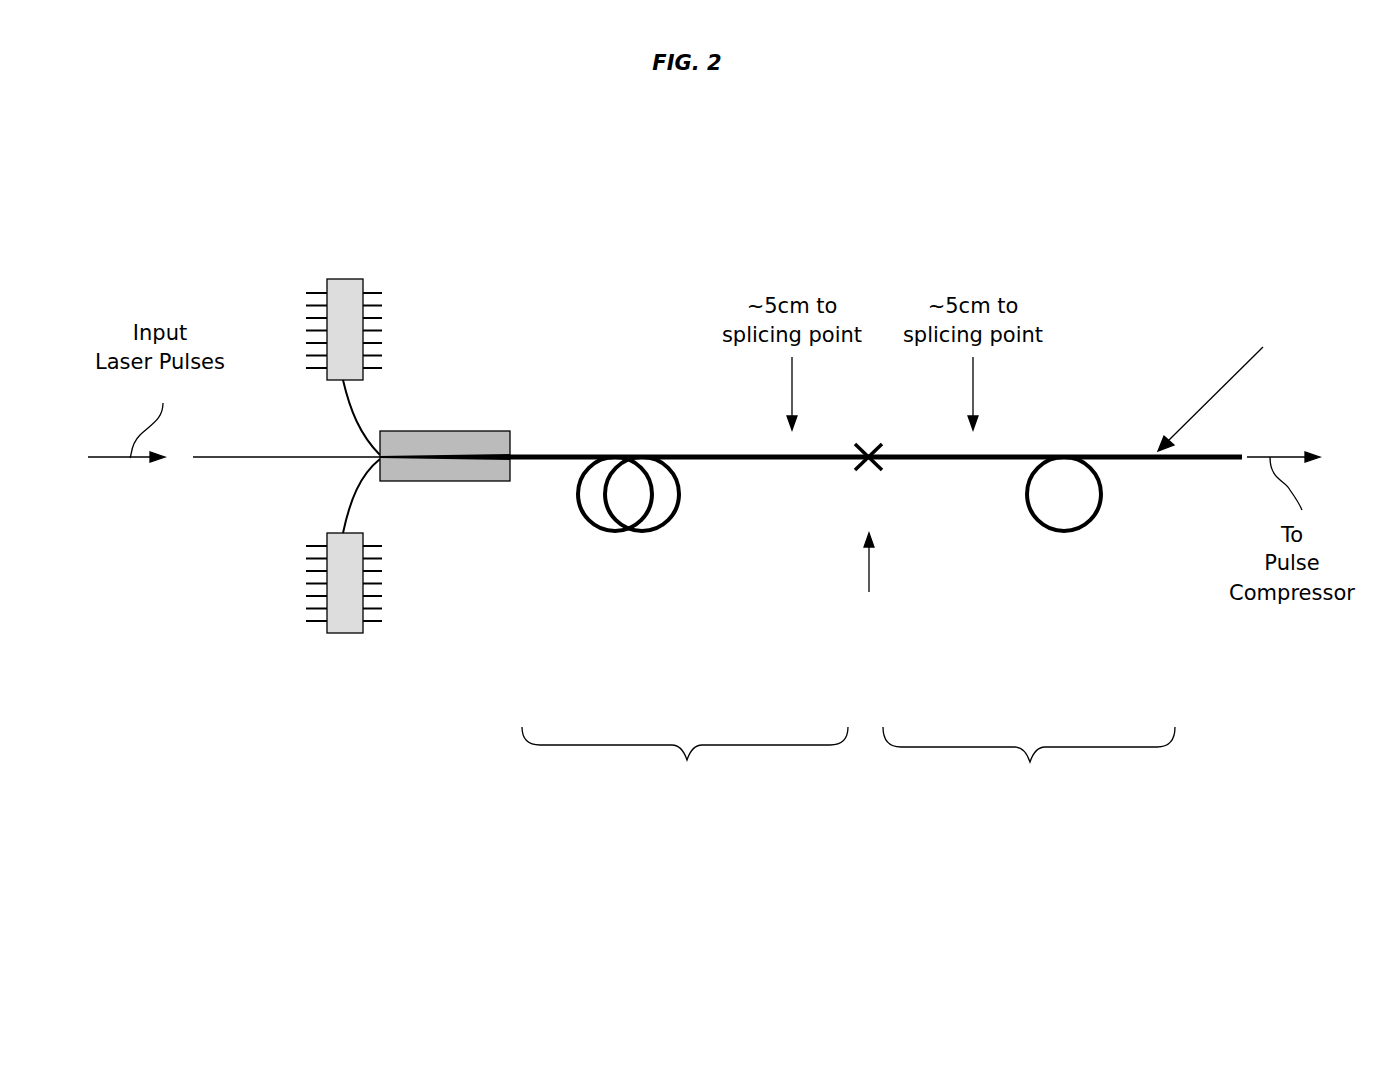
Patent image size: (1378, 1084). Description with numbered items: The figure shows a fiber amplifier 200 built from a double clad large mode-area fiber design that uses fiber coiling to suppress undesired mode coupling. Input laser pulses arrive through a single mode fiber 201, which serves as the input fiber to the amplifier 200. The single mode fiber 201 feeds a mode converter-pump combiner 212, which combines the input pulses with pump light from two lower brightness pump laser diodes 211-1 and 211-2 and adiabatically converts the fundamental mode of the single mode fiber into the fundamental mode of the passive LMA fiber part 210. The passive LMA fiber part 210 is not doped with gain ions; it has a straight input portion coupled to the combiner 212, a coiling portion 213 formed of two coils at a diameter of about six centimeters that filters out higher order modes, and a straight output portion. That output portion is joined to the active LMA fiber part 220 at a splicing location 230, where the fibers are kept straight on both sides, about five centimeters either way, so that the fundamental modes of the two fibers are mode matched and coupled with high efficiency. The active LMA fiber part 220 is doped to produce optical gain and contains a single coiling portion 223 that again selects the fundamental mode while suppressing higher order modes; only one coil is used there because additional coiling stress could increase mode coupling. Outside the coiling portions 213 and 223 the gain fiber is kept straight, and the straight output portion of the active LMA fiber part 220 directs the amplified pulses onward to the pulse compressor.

The fiber amplifier 200 is at (464, 122).
The single mode fiber 201 is at (270, 458).
The pump laser diode 211-1 is at (336, 339).
The pump laser diode 211-2 is at (342, 578).
The mode converter-pump combiner 212 is at (445, 431).
The coiling portion of passive LMA fiber 213 is at (615, 533).
The passive LMA fiber part 210 is at (689, 642).
The splicing location 230 is at (868, 544).
The active LMA fiber part 220 is at (1104, 528).
The coiling portion of active LMA fiber 223 is at (1077, 533).